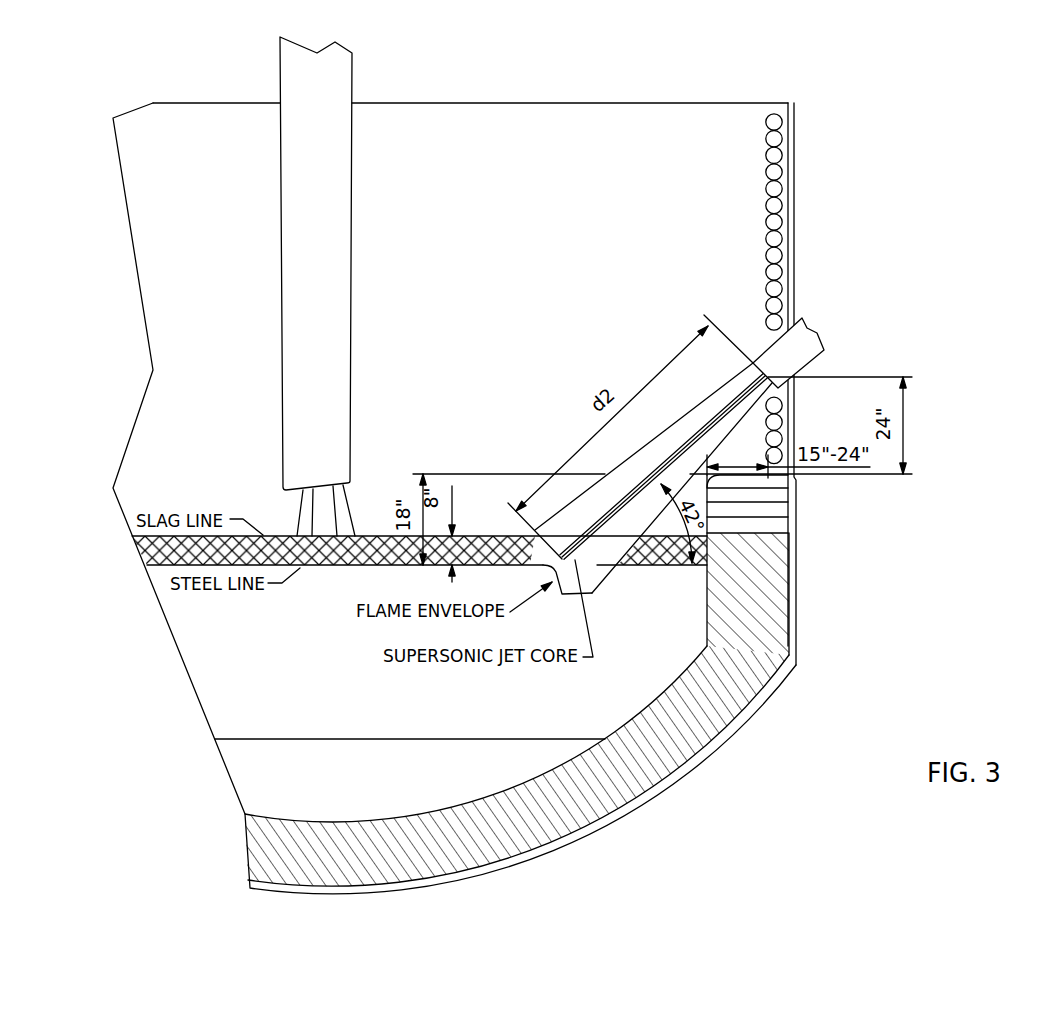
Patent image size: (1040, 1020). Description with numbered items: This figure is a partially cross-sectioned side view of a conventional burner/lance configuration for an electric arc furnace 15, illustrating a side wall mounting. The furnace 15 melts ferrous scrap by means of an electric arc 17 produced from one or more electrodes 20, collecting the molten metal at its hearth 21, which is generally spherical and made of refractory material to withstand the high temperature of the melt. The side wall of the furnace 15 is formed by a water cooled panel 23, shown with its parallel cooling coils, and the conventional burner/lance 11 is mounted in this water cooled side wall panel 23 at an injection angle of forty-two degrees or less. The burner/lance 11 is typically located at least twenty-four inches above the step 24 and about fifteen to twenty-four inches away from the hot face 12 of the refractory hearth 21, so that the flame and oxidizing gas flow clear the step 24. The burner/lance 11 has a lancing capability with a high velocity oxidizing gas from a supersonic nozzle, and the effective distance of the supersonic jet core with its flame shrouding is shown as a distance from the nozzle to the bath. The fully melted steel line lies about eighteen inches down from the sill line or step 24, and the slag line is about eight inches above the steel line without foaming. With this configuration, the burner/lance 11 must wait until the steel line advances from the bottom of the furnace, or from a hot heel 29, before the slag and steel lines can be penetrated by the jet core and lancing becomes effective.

The burner/lance 11 is at (808, 325).
The hot face of the refractory 12 is at (705, 595).
The electric arc furnace 15 is at (851, 150).
The electric arc 17 is at (348, 500).
The electrode 20 is at (338, 233).
The hearth 21 is at (713, 723).
The fluid cooled panel 23 is at (782, 205).
The step 24 is at (750, 473).
The hot heel 29 is at (248, 747).